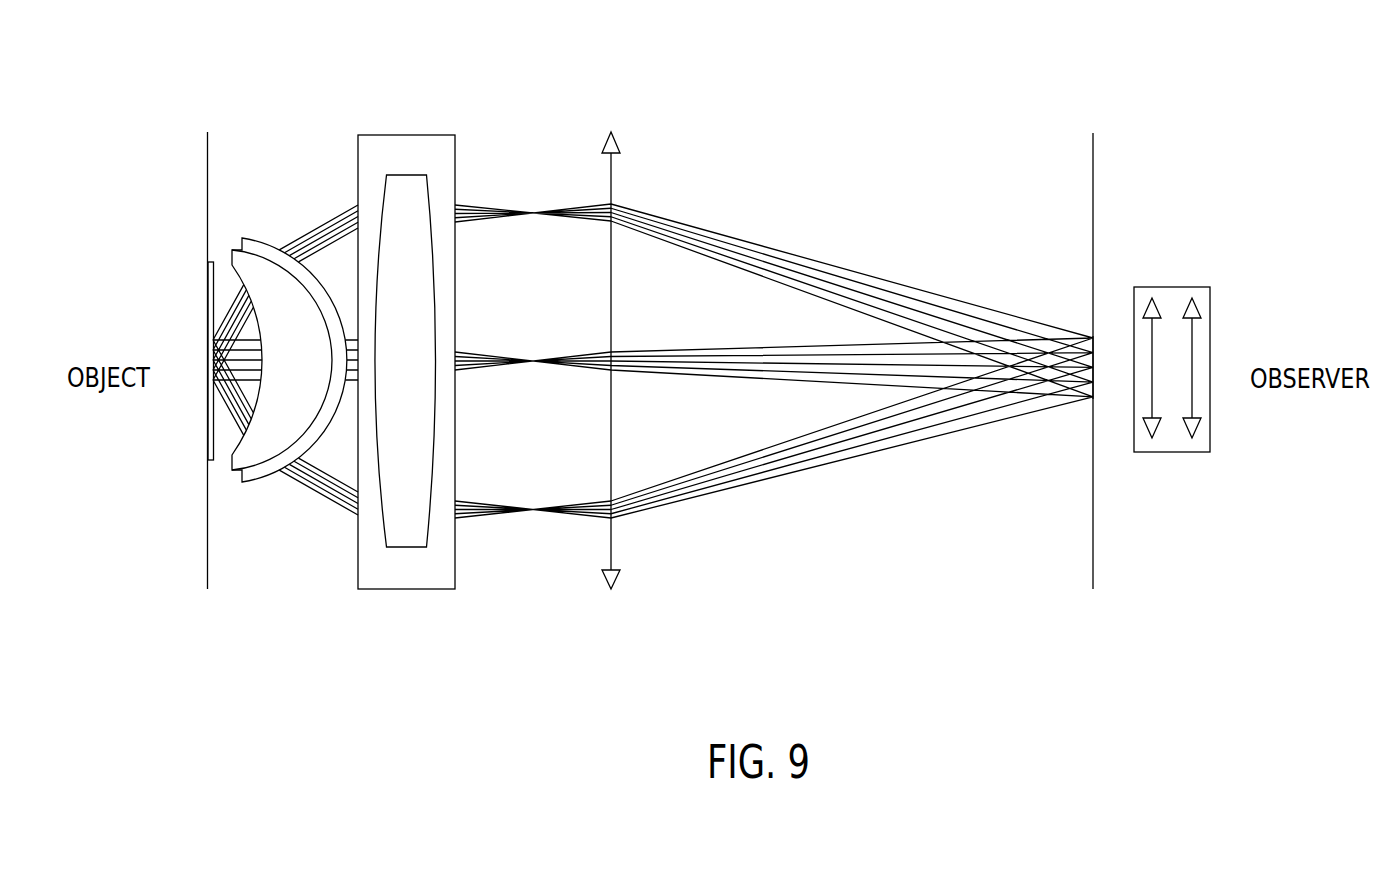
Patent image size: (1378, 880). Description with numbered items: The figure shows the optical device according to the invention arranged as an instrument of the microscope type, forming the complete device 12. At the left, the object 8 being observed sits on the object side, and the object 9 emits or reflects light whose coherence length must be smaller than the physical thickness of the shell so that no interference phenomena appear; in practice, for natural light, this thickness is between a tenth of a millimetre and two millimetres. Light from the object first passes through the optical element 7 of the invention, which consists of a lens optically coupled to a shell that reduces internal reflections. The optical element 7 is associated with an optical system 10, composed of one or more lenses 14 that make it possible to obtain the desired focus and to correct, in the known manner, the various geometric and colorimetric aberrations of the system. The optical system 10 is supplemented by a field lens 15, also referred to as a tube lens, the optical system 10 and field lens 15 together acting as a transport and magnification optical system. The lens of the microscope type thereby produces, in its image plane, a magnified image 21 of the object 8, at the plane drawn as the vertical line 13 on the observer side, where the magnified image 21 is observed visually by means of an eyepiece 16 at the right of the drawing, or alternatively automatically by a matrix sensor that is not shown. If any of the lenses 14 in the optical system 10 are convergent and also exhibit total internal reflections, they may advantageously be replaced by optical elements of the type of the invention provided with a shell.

The optical element 7 is at (257, 273).
The object 8 is at (210, 302).
The object being observed 9 is at (207, 223).
The optical system 10 is at (433, 143).
The device 12 is at (892, 163).
The observer plane 13 is at (1093, 152).
The lens 14 is at (413, 522).
The field lens 15 is at (612, 267).
The eyepiece 16 is at (1183, 288).
The magnified image 21 is at (1093, 398).